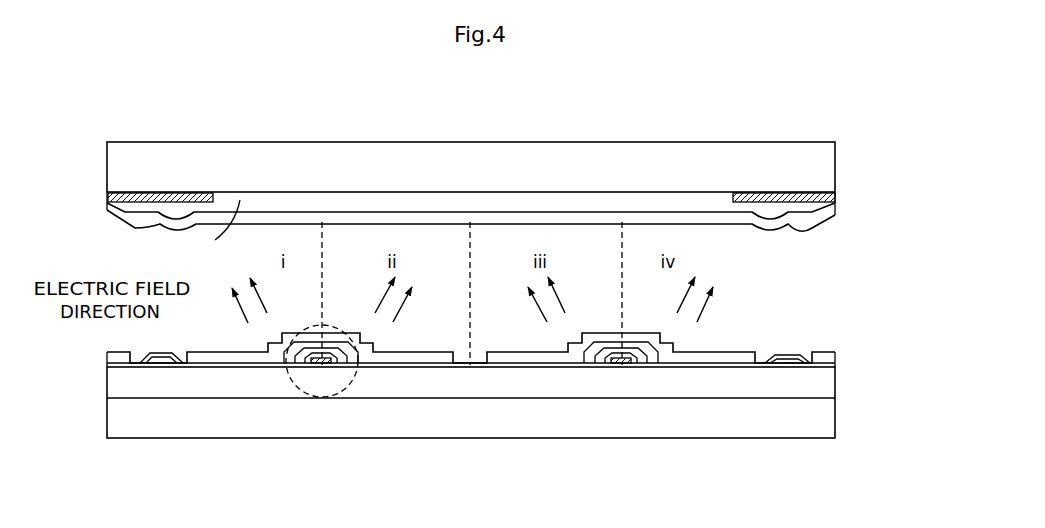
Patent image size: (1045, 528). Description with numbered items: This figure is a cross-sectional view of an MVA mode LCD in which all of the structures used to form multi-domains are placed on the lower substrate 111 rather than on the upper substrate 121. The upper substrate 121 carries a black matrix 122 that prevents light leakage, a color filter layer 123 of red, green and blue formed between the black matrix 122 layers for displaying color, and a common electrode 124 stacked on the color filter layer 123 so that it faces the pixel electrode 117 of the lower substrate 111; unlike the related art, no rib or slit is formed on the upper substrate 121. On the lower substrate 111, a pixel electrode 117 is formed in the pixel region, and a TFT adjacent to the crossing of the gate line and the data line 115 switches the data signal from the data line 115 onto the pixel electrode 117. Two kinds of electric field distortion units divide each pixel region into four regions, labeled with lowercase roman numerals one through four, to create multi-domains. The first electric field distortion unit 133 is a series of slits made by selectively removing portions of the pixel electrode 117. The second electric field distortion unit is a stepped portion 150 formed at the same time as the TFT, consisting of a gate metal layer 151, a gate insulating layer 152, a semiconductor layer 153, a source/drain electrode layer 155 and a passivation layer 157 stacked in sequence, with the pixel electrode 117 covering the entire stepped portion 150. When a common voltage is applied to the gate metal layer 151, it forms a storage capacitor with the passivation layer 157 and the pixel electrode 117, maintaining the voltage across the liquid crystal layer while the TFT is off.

The lower substrate 111 is at (822, 418).
The data line 115 is at (160, 367).
The pixel electrode 117 is at (397, 352).
The upper substrate 121 is at (830, 162).
The black matrix 122 is at (836, 197).
The color filter layer 123 is at (806, 196).
The common electrode 124 is at (826, 216).
The first electric field distortion unit 133 is at (465, 365).
The stepped portion 150 is at (360, 373).
The gate metal layer 151 is at (322, 368).
The gate insulating layer 152 is at (333, 368).
The semiconductor layer 153 is at (353, 368).
The source/drain electrode layer 155 is at (315, 345).
The passivation layer 157 is at (255, 366).